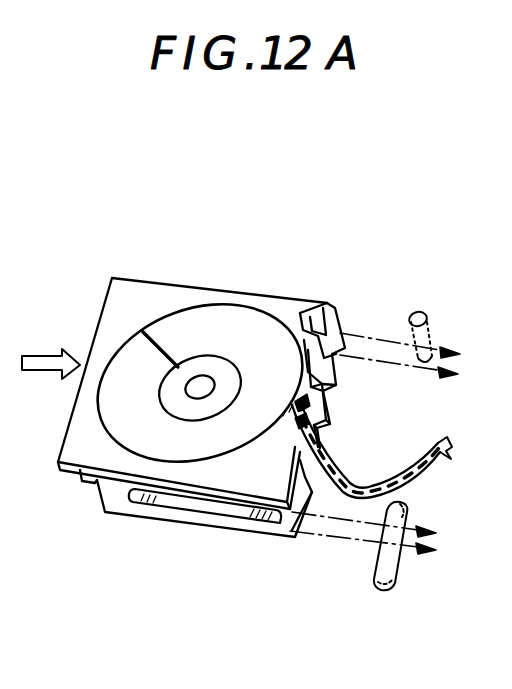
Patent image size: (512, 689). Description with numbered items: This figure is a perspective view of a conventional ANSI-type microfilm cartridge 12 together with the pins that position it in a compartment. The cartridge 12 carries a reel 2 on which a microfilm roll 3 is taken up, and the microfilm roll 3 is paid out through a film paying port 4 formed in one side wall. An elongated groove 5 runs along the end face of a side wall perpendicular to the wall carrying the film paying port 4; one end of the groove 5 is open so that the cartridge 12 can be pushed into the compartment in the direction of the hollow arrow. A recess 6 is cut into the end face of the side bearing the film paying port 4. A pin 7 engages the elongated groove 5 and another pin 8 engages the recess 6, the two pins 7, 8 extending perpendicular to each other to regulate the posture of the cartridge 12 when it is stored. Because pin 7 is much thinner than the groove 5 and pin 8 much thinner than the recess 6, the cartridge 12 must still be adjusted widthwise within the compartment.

The microfilm cartridge 12 is at (212, 290).
The reel 2 is at (178, 328).
The recess 6 is at (316, 312).
The microfilm roll 3 is at (451, 462).
The film paying port 4 is at (312, 426).
The elongated groove 5 is at (183, 506).
The pin 8 is at (428, 325).
The pin 7 is at (403, 571).